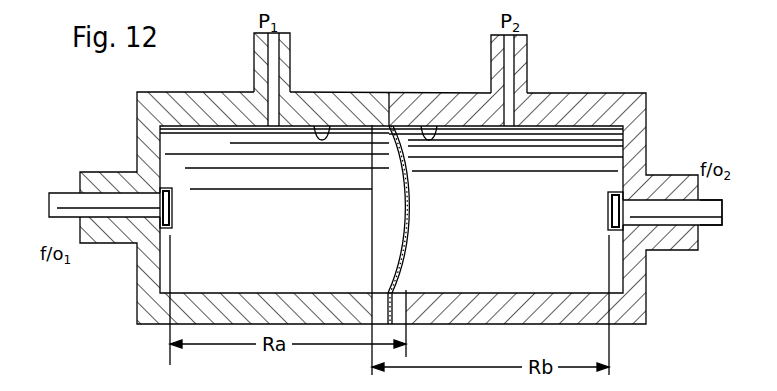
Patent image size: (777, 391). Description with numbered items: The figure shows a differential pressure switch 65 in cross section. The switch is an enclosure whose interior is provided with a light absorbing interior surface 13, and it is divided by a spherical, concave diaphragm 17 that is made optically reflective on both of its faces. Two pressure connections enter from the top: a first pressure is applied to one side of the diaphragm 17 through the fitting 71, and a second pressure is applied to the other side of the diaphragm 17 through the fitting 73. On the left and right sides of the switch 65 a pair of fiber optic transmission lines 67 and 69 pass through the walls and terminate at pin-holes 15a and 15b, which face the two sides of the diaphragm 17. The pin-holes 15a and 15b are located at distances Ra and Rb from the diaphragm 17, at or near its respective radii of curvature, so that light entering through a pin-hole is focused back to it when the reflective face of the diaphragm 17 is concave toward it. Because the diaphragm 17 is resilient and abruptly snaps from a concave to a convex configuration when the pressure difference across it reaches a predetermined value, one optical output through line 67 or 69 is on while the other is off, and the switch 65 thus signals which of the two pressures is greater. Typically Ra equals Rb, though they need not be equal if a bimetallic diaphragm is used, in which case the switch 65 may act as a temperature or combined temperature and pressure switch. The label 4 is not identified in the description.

The differential pressure switch 65 is at (566, 92).
The fitting 71 is at (290, 68).
The fitting 73 is at (527, 61).
The light absorbing interior surface 13 is at (322, 128).
The diaphragm 17 is at (397, 258).
The fiber optic transmission line 67 is at (70, 193).
The fiber optic transmission line 69 is at (715, 226).
The fiber optic output 4 is at (721, 213).
The pin-hole 15a is at (176, 208).
The pin-hole 15b is at (606, 208).